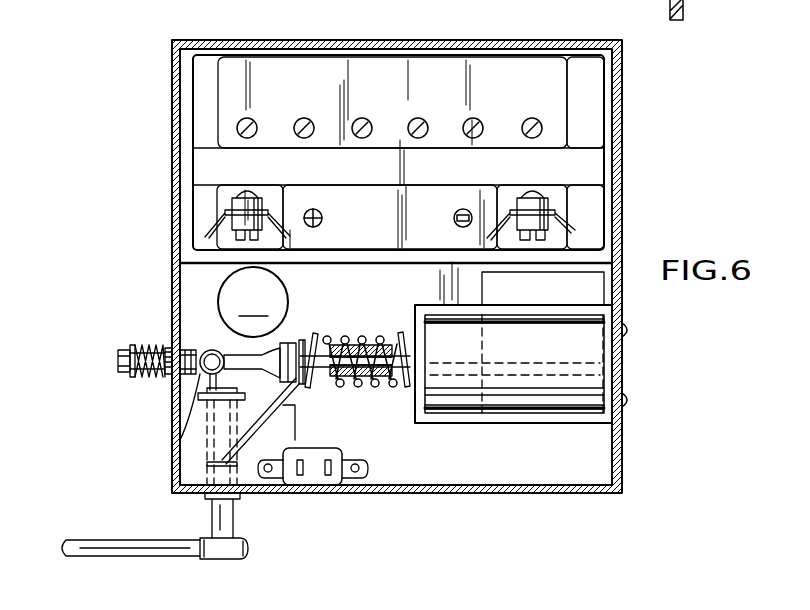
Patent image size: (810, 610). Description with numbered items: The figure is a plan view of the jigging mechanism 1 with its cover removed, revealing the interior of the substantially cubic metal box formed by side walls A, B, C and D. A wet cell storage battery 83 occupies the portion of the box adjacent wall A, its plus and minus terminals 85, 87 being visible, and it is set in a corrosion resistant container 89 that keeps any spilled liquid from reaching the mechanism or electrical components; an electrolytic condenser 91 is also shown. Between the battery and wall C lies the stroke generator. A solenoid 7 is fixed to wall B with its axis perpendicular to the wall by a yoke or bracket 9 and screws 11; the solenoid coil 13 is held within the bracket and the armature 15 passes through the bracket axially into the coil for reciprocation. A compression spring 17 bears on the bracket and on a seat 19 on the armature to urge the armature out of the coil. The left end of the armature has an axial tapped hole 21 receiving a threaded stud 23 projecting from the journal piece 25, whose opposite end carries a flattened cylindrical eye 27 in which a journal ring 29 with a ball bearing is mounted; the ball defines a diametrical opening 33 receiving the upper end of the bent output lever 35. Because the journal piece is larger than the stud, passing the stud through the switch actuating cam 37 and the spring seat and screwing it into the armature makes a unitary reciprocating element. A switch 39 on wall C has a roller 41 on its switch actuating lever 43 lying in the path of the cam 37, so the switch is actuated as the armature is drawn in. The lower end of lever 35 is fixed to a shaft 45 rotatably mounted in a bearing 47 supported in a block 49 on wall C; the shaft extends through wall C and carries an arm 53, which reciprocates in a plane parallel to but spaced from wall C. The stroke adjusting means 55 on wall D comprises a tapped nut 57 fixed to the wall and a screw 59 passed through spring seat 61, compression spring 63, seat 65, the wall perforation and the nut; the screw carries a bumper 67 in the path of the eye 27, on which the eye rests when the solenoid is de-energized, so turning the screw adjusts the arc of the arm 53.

The jigging mechanism 1 is at (172, 137).
The solenoid 7 is at (563, 401).
The yoke or bracket 9 is at (512, 424).
The screws 11 is at (630, 399).
The solenoid coil 13 is at (514, 364).
The armature 15 is at (404, 392).
The compression spring 17 is at (347, 338).
The seat 19 is at (313, 333).
The axial tapped hole 21 is at (393, 345).
The threaded stud 23 is at (365, 386).
The journal piece 25 is at (253, 370).
The eye 27 is at (176, 350).
The journal ring 29 is at (170, 428).
The diametrical opening 33 is at (213, 350).
The bent output lever 35 is at (222, 436).
The switch actuating cam 37 is at (295, 430).
The switch 39 is at (315, 487).
The roller 41 is at (270, 480).
The switch actuating lever 43 is at (350, 478).
The shaft 45 is at (240, 526).
The bearing 47 is at (200, 442).
The block 49 is at (195, 482).
The arm 53 is at (135, 552).
The stroke adjusting means 55 is at (117, 352).
The tapped nut 57 is at (182, 384).
The screw 59 is at (118, 369).
The spring seat 61 is at (132, 378).
The compression spring 63 is at (150, 346).
The seat 65 is at (166, 350).
The bumper 67 is at (188, 386).
The wet cell storage battery 83 is at (485, 90).
The plus terminal 85 is at (248, 205).
The minus terminal 87 is at (540, 205).
The container 89 is at (403, 255).
The electrolytic condenser 91 is at (253, 302).